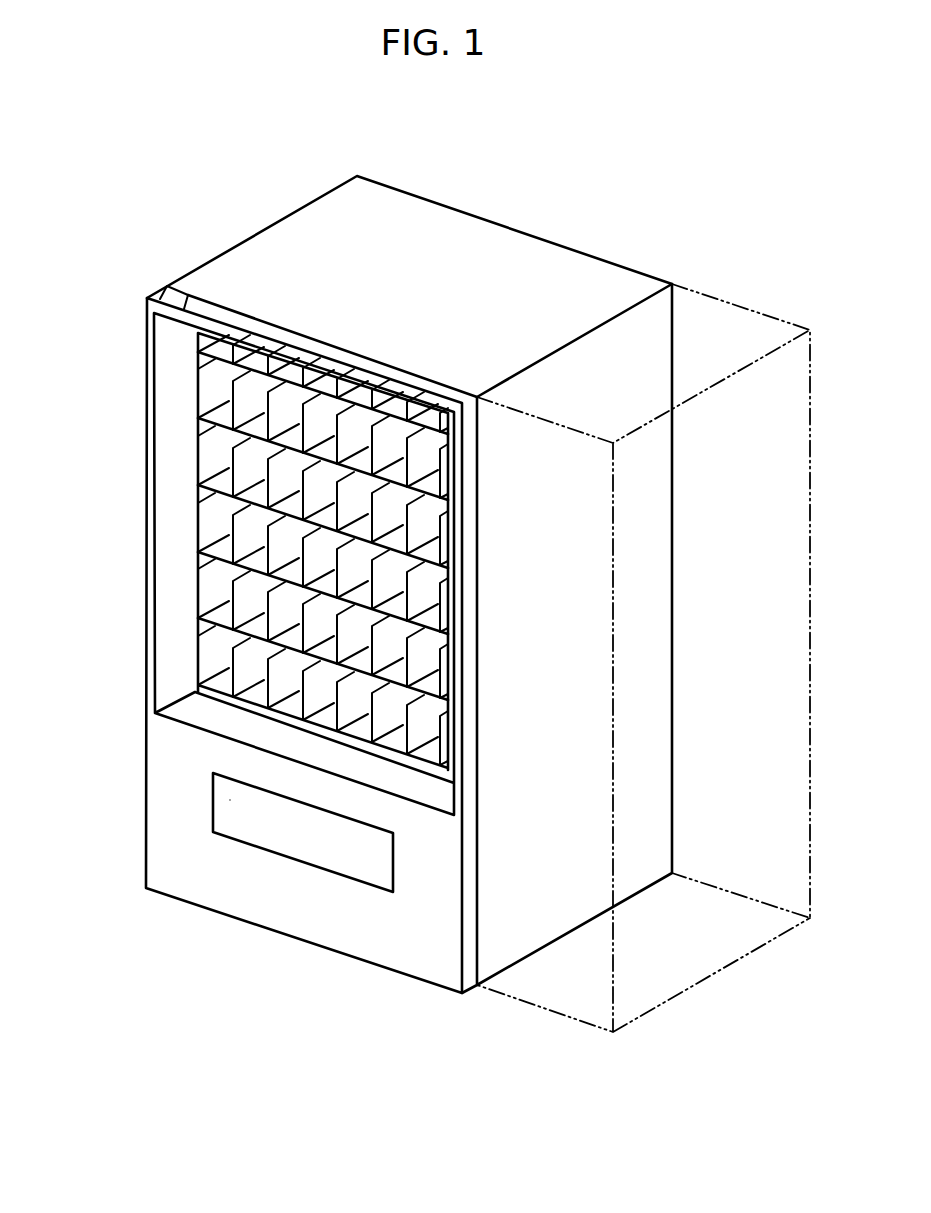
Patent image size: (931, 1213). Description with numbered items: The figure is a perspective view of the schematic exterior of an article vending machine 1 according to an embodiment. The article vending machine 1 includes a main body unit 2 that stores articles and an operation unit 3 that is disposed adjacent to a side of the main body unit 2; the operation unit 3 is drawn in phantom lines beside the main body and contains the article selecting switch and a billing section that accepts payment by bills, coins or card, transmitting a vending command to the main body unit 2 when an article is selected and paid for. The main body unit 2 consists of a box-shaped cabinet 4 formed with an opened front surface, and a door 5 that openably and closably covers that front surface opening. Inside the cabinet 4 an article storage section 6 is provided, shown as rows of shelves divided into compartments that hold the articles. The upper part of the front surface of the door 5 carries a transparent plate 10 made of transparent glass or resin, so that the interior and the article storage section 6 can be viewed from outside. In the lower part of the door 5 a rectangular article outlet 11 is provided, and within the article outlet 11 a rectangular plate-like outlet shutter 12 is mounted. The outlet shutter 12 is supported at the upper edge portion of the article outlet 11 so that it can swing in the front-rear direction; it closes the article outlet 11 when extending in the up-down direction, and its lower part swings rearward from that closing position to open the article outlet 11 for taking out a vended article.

The article vending machine 1 is at (431, 563).
The main body unit 2 is at (432, 202).
The operation unit 3 is at (753, 310).
The cabinet 4 is at (297, 211).
The door 5 is at (146, 306).
The article storage section 6 is at (218, 588).
The transparent plate 10 is at (176, 391).
The article outlet 11 is at (342, 877).
The outlet shutter 12 is at (272, 833).